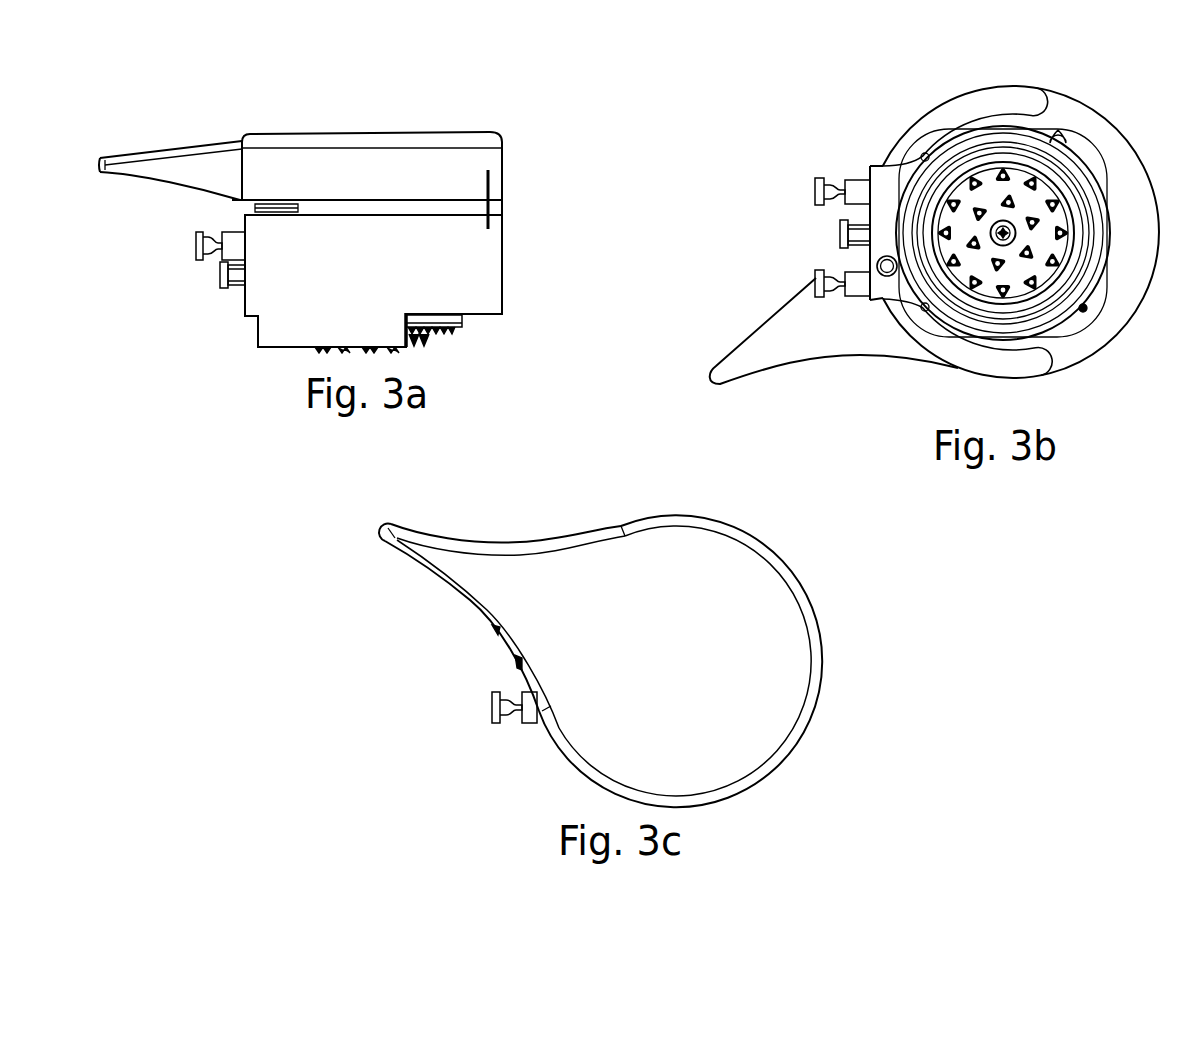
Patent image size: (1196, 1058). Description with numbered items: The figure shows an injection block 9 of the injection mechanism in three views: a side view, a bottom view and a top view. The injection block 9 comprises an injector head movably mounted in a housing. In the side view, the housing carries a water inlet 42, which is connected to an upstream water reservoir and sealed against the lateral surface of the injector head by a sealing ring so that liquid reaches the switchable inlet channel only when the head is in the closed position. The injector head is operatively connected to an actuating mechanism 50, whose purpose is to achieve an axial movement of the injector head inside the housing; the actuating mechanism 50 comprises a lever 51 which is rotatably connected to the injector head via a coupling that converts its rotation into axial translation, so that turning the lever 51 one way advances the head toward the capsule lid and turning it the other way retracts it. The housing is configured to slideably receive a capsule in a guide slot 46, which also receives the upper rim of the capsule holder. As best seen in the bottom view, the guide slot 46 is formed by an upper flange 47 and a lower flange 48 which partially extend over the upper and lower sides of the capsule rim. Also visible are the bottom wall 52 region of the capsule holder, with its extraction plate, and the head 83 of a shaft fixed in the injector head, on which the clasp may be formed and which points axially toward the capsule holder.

In FIG. 3A, the injection block 9 is at (516, 211).
In FIG. 3B, the water inlet 42 is at (840, 227).
In FIG. 3A, the guide slot 46 is at (472, 321).
In FIG. 3B, the upper flange 47 is at (1053, 347).
In FIG. 3B, the lower flange 48 is at (980, 102).
In FIG. 3A, the actuating mechanism 50 is at (385, 116).
In FIG. 3C, the actuating mechanism 50 is at (435, 586).
In FIG. 3A, the lever 51 is at (167, 167).
In FIG. 3B, the lever 51 is at (807, 343).
In FIG. 3C, the lever 51 is at (450, 558).
In FIG. 3B, the bottom wall 52 is at (1056, 222).
In FIG. 3B, the head 83 is at (1063, 132).